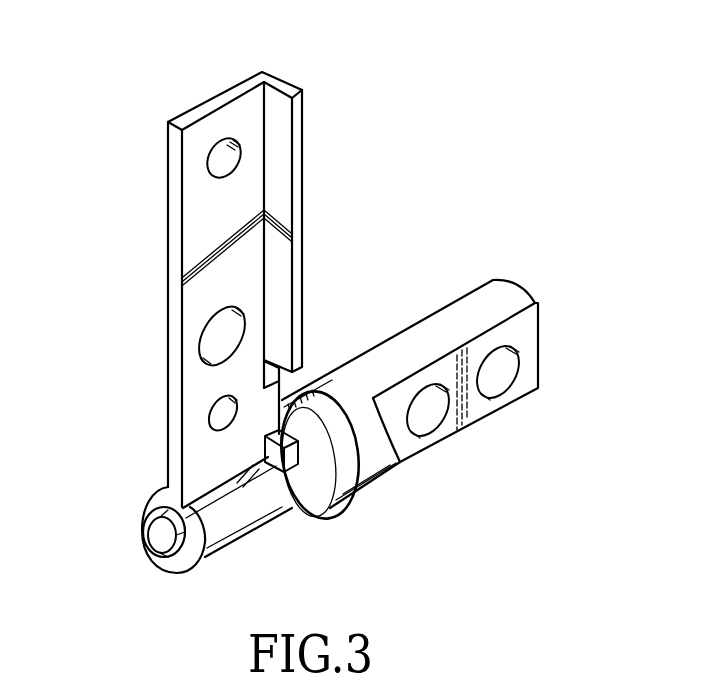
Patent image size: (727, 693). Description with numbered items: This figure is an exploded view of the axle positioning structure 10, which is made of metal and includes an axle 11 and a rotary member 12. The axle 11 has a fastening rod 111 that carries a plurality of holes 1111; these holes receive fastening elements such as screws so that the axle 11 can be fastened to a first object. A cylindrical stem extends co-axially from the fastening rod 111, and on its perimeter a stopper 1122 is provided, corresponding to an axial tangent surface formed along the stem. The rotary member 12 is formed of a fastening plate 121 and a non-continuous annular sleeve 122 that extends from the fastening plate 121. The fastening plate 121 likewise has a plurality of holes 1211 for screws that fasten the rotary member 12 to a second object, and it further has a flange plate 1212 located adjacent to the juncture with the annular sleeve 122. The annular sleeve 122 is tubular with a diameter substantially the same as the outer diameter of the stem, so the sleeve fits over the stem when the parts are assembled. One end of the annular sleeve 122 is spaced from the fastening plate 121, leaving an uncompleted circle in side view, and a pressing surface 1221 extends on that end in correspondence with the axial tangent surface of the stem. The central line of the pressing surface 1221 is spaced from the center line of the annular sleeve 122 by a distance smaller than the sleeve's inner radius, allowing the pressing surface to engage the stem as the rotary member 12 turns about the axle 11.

The axle positioning structure 10 is at (438, 165).
The axle 11 is at (418, 302).
The fastening rod 111 is at (460, 430).
The holes 1111 is at (495, 372).
The stopper 1122 is at (298, 458).
The rotary member 12 is at (157, 333).
The fastening plate 121 is at (198, 243).
The holes 1211 is at (229, 140).
The flange plate 1212 is at (322, 380).
The annular sleeve 122 is at (182, 568).
The pressing surface 1221 is at (150, 520).